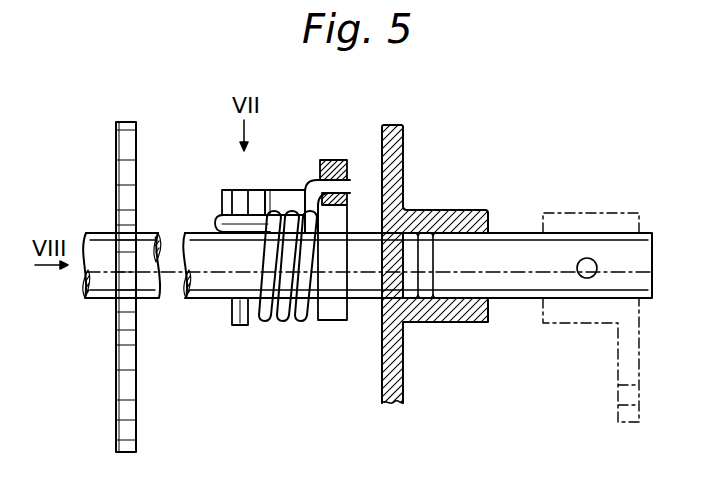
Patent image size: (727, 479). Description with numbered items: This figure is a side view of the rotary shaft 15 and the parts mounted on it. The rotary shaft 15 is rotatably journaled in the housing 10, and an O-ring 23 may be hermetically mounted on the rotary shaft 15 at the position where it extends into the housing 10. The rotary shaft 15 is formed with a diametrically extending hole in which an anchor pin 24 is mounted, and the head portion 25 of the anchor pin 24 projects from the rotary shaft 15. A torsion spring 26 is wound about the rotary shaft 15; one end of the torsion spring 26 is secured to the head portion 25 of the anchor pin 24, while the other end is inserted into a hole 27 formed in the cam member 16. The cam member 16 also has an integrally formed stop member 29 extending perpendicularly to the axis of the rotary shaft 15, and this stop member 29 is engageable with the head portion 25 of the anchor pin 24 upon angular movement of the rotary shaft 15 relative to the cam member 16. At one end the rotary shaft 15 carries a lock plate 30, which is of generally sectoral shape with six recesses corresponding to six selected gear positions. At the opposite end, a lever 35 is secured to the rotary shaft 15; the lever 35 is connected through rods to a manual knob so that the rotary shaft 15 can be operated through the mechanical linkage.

The housing 10 is at (382, 388).
The rotary shaft 15 is at (222, 300).
The cam member 16 is at (338, 320).
The O-ring 23 is at (428, 300).
The anchor pin 24 is at (240, 326).
The head portion 25 is at (235, 190).
The torsion spring 26 is at (275, 318).
The hole 27 is at (338, 160).
The stop member 29 is at (277, 193).
The lock plate 30 is at (137, 432).
The lever 35 is at (618, 373).